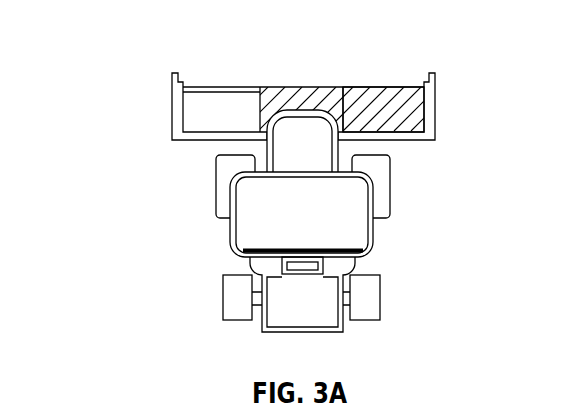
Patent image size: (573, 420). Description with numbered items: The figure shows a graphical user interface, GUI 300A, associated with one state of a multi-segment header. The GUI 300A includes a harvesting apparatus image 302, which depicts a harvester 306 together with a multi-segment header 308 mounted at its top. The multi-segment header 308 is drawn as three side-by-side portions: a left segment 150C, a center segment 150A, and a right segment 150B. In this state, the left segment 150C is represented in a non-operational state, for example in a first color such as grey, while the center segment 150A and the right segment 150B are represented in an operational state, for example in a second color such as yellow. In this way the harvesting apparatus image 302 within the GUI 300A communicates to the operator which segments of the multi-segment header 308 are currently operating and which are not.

The GUI 300A is at (125, 43).
The center segment 150A is at (302, 85).
The right segment 150B is at (395, 85).
The left segment 150C is at (220, 85).
The harvesting apparatus image 302 is at (189, 191).
The harvester 306 is at (373, 235).
The multi-segment header 308 is at (437, 113).